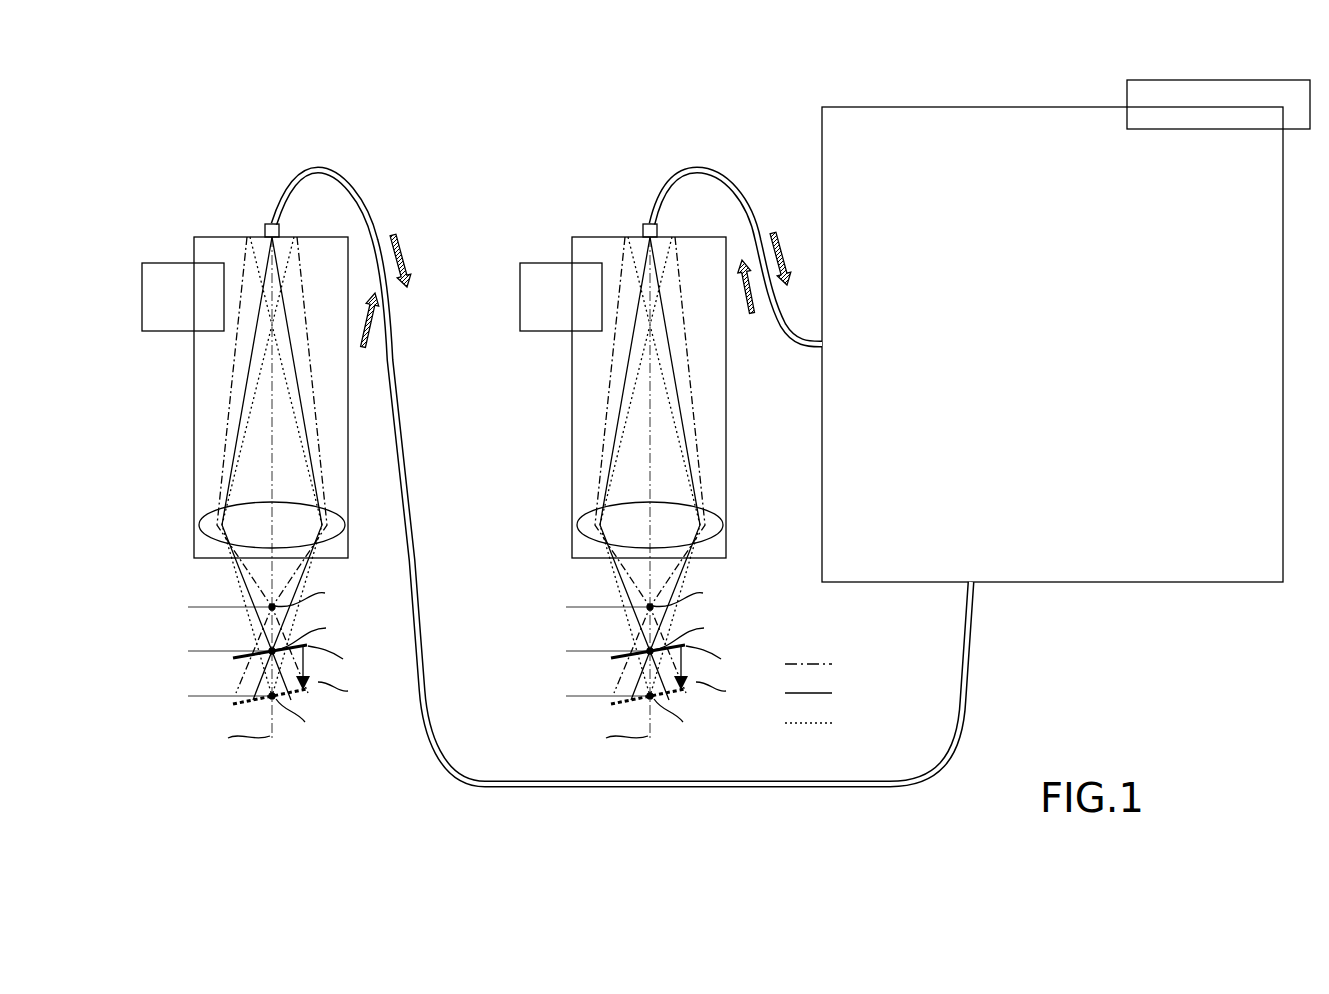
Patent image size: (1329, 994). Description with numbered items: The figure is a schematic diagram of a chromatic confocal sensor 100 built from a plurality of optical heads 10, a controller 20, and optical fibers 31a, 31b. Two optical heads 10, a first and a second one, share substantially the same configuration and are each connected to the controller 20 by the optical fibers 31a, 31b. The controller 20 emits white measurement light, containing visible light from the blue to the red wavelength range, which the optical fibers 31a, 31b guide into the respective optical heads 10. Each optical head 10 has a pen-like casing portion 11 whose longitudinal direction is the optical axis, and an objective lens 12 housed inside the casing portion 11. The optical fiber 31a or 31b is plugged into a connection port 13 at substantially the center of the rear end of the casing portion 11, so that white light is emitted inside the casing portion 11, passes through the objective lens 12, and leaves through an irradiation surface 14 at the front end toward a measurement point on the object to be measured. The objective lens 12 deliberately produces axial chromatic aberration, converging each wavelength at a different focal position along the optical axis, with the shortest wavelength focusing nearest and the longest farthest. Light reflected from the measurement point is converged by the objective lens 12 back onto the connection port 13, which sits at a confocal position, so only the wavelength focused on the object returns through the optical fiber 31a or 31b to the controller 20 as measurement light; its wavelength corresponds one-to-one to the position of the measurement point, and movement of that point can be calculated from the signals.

The chromatic sensor 100 is at (799, 80).
The controller 20 is at (1014, 100).
The optical head 10 is at (206, 232).
The casing portion 11 is at (193, 412).
The objective lens 12 is at (200, 522).
The connection port 13 is at (280, 228).
The irradiation surface 14 is at (195, 560).
The optical fiber 31a is at (720, 170).
The optical fiber 31b is at (343, 172).